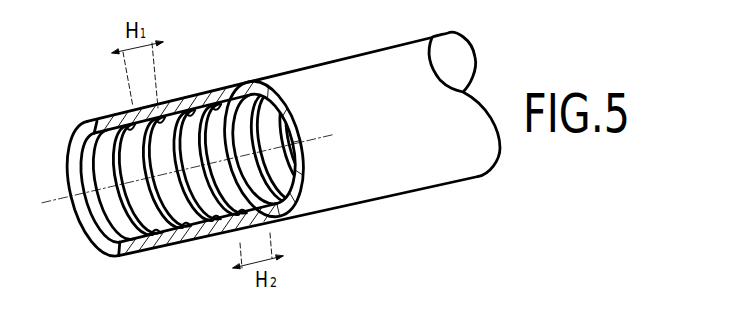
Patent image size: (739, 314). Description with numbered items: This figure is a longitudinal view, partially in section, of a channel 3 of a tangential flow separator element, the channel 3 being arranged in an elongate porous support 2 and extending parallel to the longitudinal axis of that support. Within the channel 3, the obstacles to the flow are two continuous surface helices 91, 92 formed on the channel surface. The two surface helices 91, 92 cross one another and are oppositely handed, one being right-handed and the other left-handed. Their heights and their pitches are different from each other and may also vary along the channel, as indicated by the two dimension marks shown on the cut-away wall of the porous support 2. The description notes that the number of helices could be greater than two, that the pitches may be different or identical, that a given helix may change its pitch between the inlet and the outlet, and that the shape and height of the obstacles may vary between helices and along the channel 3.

The porous support 2 is at (118, 117).
The channel 3 is at (90, 157).
The surface helix 91 is at (163, 217).
The surface helix 92 is at (218, 133).